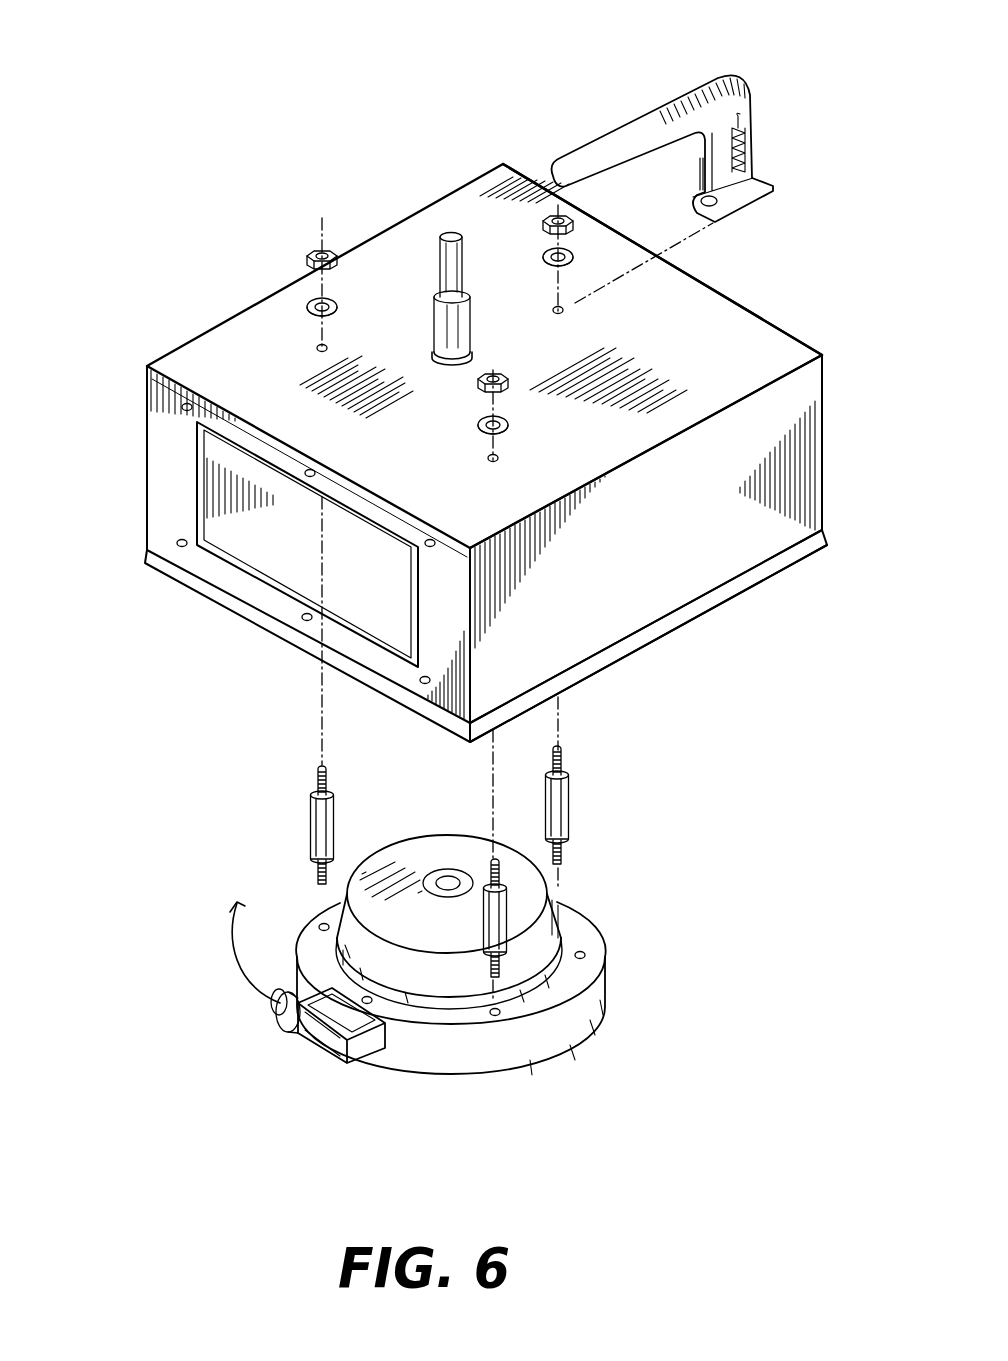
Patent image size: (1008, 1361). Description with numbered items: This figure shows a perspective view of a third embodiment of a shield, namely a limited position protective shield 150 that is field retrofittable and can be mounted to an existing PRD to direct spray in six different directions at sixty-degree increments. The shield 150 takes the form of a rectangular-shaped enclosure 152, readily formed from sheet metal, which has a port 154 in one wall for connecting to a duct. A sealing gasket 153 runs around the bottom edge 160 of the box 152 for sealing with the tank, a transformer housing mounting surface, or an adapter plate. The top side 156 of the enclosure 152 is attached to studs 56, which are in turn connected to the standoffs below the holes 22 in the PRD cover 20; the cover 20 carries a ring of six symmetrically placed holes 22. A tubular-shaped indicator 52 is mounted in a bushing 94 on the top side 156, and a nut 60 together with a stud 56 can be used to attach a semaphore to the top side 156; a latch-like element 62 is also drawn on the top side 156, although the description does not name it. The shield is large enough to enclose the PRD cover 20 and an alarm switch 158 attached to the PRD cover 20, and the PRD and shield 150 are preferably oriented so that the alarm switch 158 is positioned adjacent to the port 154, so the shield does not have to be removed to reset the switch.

The limited position protective shield 150 is at (238, 243).
The rectangular-shaped enclosure 152 is at (775, 345).
The top side 156 is at (782, 345).
The sealing gasket 153 is at (783, 560).
The bottom edge 160 is at (615, 613).
The port 154 is at (250, 527).
The tubular-shaped indicator 52 is at (440, 265).
The bushing 94 is at (462, 330).
The nut 60 is at (540, 225).
The latch handle 62 is at (742, 92).
The studs 56 is at (310, 817).
The PRD cover 20 is at (618, 977).
The holes 22 is at (300, 952).
The alarm switch 158 is at (325, 1042).